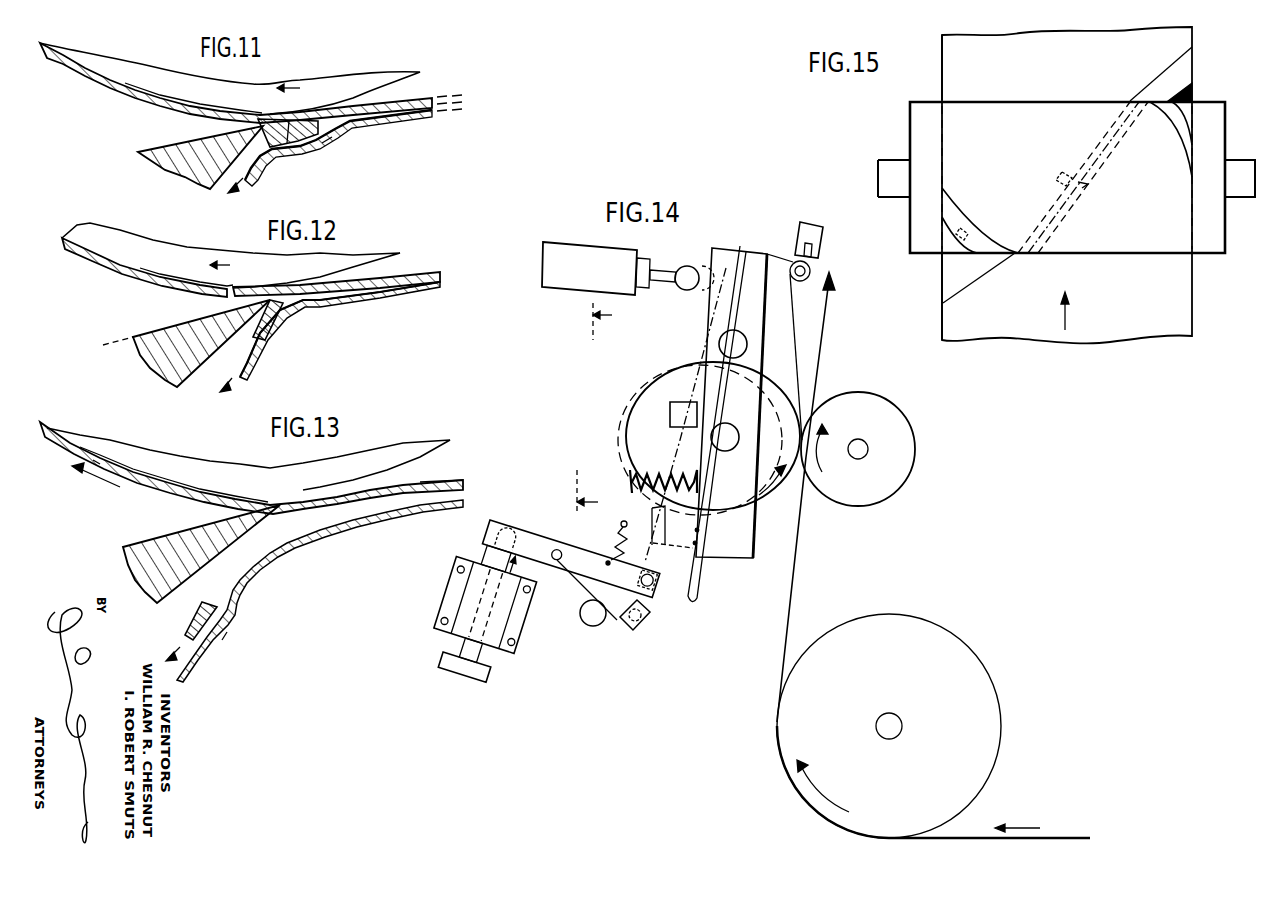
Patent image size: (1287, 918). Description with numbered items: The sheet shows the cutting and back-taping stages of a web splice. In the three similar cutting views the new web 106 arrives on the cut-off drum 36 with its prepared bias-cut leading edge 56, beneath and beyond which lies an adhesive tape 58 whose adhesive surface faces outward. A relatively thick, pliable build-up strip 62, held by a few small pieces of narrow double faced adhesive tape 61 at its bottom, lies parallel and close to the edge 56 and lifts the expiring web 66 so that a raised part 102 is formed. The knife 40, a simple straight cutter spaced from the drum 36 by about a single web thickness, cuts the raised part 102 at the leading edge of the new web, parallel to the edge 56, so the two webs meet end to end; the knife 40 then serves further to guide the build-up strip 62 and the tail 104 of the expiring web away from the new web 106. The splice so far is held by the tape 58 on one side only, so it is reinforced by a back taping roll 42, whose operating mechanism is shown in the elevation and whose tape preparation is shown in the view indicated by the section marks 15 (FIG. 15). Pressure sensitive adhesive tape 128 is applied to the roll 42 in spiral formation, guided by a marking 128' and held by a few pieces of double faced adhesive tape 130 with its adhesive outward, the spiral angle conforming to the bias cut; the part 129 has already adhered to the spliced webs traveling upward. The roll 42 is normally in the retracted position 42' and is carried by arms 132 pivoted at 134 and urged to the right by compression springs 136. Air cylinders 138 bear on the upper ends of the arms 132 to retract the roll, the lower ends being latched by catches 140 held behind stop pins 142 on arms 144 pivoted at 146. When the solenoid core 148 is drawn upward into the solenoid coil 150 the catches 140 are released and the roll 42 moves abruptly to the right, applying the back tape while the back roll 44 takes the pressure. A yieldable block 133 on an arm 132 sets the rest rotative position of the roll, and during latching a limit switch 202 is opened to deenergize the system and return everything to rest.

In FIG. 14, the section line of FIG. 15 is at (605, 409).
In FIG. 11, the cut-off drum 36 is at (130, 70).
In FIG. 12, the cut-off drum 36 is at (107, 233).
In FIG. 13, the cut-off drum 36 is at (143, 452).
In FIG. 14, the cut-off drum 36 is at (985, 657).
In FIG. 11, the knife 40 is at (185, 138).
In FIG. 12, the knife 40 is at (183, 327).
In FIG. 13, the knife 40 is at (157, 540).
In FIG. 14, the back taping roll 42 is at (715, 434).
In FIG. 15, the back taping roll 42 is at (1066, 159).
In FIG. 14, the retracted position of back taping roll 42' is at (688, 439).
In FIG. 14, the back roll 44 is at (908, 418).
In FIG. 11, the leading edge 56 is at (253, 103).
In FIG. 12, the leading edge 56 is at (237, 285).
In FIG. 13, the leading edge 56 is at (93, 460).
In FIG. 11, the adhesive tape 58 is at (193, 103).
In FIG. 12, the adhesive tape 58 is at (160, 272).
In FIG. 13, the adhesive tape 58 is at (82, 452).
In FIG. 11, the double faced adhesive tape 61 is at (283, 143).
In FIG. 11, the build-up strip 62 is at (307, 130).
In FIG. 12, the build-up strip 62 is at (280, 327).
In FIG. 13, the build-up strip 62 is at (210, 600).
In FIG. 11, the expiring web 66 is at (113, 88).
In FIG. 12, the expiring web 66 is at (120, 277).
In FIG. 13, the expiring web 66 is at (45, 440).
In FIG. 15, the expiring web 66 is at (942, 67).
In FIG. 11, the raised part of the expiring web 102 is at (323, 138).
In FIG. 13, the raised part of the expiring web 102 is at (220, 643).
In FIG. 11, the tail of the expiring web 104 is at (397, 117).
In FIG. 12, the tail of the expiring web 104 is at (416, 300).
In FIG. 13, the tail of the expiring web 104 is at (310, 547).
In FIG. 11, the new web 106 is at (420, 98).
In FIG. 12, the new web 106 is at (435, 270).
In FIG. 13, the new web 106 is at (453, 477).
In FIG. 15, the new web 106 is at (1185, 317).
In FIG. 15, the pressure sensitive adhesive tape 128 is at (1045, 177).
In FIG. 15, the marking on back taping roll 128' is at (1210, 130).
In FIG. 15, the adhered tape part 129 is at (1185, 58).
In FIG. 15, the double faced adhesive tape 130 is at (970, 222).
In FIG. 14, the arms 132 is at (742, 540).
In FIG. 14, the block 133 is at (670, 415).
In FIG. 14, the pivot 134 is at (745, 342).
In FIG. 14, the compression springs 136 is at (632, 470).
In FIG. 14, the air cylinders 138 is at (553, 285).
In FIG. 14, the catches 140 is at (697, 590).
In FIG. 14, the stop pins 142 is at (652, 603).
In FIG. 14, the arms 144 is at (587, 553).
In FIG. 14, the pivot 146 is at (556, 562).
In FIG. 14, the solenoid core 148 is at (483, 655).
In FIG. 14, the solenoid coil 150 is at (466, 597).
In FIG. 14, the limit switch 202 is at (810, 221).